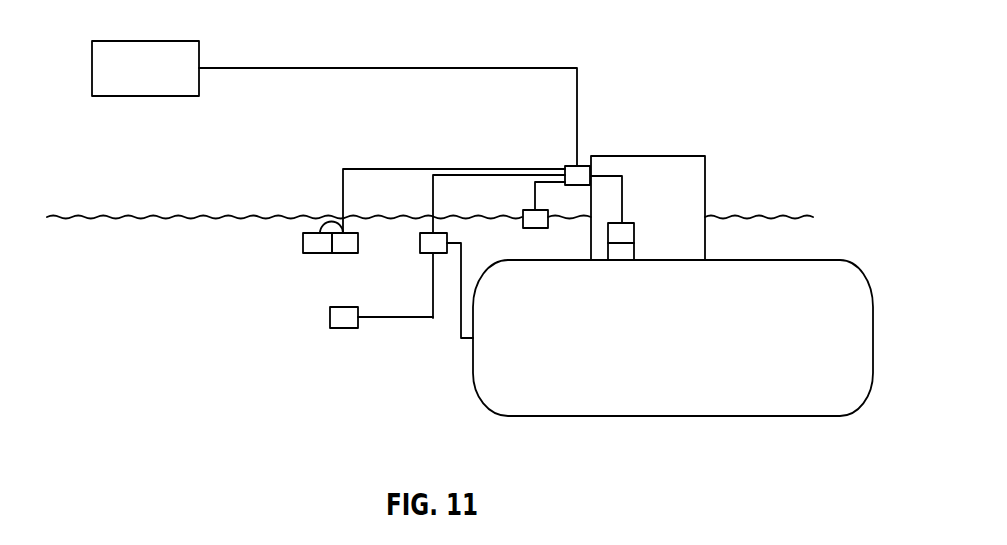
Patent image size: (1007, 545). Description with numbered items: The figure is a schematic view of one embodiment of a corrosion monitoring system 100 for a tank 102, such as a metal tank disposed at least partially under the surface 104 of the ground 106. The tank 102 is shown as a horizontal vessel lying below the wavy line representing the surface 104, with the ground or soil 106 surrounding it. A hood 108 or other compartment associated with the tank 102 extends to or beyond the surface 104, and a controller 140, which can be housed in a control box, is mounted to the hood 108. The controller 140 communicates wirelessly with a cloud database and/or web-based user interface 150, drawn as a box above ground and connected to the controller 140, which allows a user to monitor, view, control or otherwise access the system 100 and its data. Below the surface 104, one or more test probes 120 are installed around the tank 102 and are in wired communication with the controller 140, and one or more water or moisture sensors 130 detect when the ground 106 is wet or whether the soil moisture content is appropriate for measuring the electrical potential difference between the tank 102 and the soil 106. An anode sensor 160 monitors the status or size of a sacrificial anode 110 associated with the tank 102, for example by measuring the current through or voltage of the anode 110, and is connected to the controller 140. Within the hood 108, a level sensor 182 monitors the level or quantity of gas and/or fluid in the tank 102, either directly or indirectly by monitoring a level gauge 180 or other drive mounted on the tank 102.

The monitoring system 100 is at (745, 40).
The tank 102 is at (536, 407).
The surface of the ground 104 is at (60, 215).
The ground 106 is at (178, 331).
The hood 108 is at (645, 156).
The sacrificial anode 110 is at (342, 330).
The test probe 120 is at (303, 242).
The water or moisture sensor 130 is at (530, 207).
The controller 140 is at (582, 166).
The cloud database and/or user interface 150 is at (166, 81).
The anode sensor 160 is at (420, 242).
The level gauge 180 is at (637, 253).
The level sensor 182 is at (637, 234).